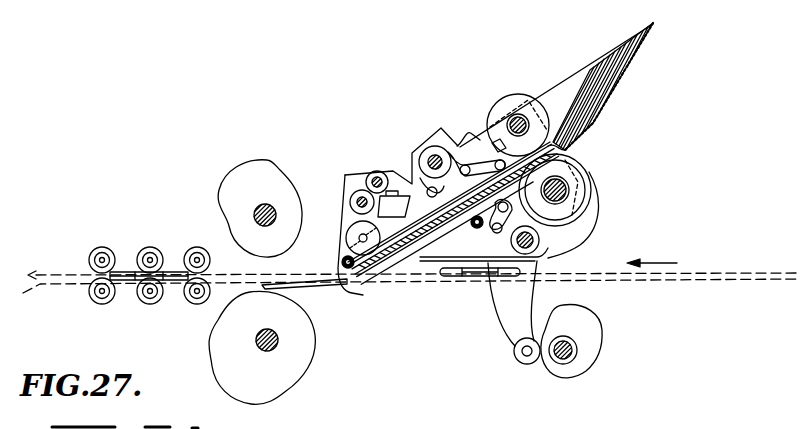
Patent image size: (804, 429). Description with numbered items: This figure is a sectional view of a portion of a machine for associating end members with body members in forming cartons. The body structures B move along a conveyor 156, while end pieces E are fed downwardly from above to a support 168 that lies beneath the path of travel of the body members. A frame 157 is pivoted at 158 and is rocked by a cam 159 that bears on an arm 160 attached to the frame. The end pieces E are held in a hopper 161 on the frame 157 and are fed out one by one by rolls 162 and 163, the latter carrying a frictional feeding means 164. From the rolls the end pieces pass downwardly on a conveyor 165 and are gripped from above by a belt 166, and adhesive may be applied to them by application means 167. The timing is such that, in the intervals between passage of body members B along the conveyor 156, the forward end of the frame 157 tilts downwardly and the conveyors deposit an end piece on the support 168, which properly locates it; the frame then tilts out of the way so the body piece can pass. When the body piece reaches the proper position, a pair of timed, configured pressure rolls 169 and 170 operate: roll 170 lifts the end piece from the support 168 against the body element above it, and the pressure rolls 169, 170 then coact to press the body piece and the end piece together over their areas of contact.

The conveyor 156 is at (630, 274).
The frame 157 is at (586, 224).
The pivot 158 is at (511, 243).
The cam 159 is at (590, 330).
The arm 160 is at (505, 302).
The hopper 161 is at (634, 87).
The roll 162 is at (576, 175).
The roll 163 is at (503, 95).
The frictional feeding means 164 is at (490, 147).
The conveyor 165 is at (573, 148).
The belt 166 is at (408, 160).
The application means 167 is at (352, 233).
The support 168 is at (324, 288).
The pressure roll 169 is at (262, 160).
The pressure roll 170 is at (315, 356).
The body structure B is at (548, 256).
The end piece E is at (580, 72).